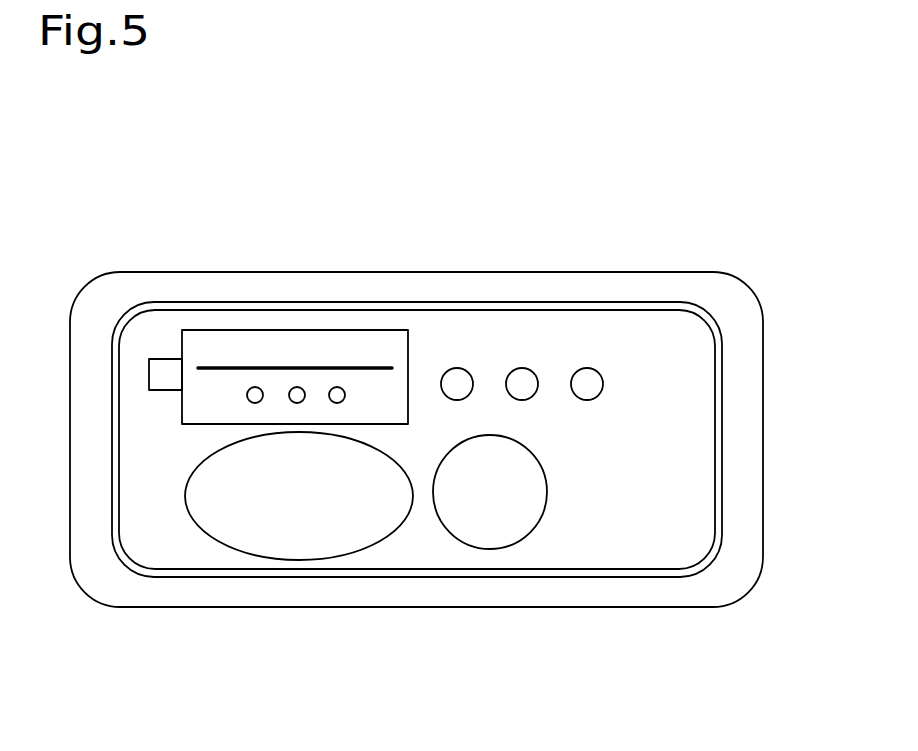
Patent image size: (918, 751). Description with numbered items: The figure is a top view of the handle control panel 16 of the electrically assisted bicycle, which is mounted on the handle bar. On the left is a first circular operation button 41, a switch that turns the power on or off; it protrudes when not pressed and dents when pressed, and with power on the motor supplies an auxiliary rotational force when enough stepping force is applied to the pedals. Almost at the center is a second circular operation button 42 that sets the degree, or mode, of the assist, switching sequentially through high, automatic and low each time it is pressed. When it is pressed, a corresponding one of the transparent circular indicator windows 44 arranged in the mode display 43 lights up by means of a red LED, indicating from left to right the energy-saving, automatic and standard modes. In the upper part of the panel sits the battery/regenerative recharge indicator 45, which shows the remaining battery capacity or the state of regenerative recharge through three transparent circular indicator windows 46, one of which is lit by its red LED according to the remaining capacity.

The handle control panel 16 is at (621, 625).
The first operation button 41 is at (248, 525).
The second operation button 42 is at (475, 525).
The mode display 43 is at (612, 452).
The circular indicator windows 44 is at (458, 386).
The battery/regenerative recharge indicator 45 is at (198, 348).
The indicator windows 46 is at (248, 400).